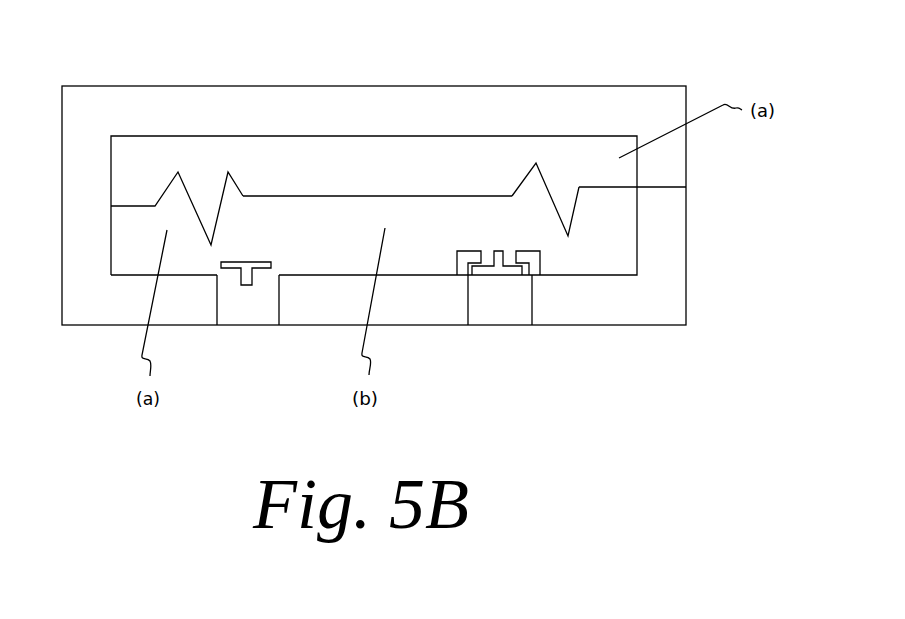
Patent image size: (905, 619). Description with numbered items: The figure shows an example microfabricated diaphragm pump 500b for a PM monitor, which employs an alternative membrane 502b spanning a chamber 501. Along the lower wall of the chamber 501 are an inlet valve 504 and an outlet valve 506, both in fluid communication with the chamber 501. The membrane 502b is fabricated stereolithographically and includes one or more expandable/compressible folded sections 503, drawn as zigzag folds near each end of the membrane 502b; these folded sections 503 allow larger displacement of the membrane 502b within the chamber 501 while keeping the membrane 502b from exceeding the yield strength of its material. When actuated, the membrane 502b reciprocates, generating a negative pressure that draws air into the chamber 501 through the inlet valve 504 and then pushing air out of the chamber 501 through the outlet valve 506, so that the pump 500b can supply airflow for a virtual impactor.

The microfabricated diaphragm pump 500b is at (105, 407).
The chamber 501 is at (327, 178).
The membrane 502b is at (620, 187).
The folded sections 503 is at (221, 195).
The inlet valve 504 is at (261, 271).
The outlet valve 506 is at (512, 276).